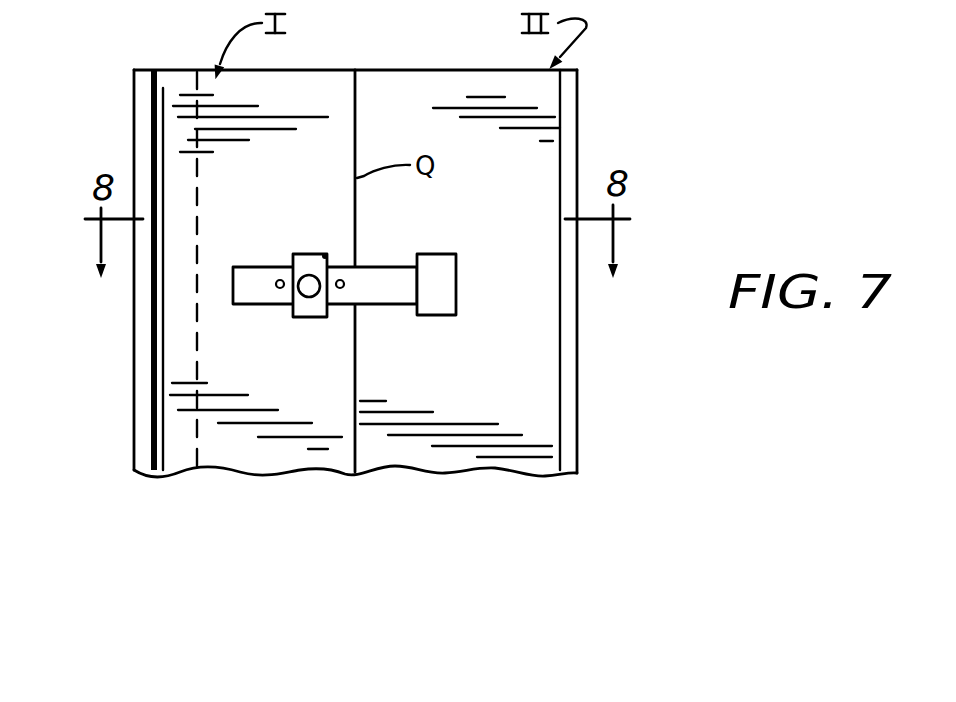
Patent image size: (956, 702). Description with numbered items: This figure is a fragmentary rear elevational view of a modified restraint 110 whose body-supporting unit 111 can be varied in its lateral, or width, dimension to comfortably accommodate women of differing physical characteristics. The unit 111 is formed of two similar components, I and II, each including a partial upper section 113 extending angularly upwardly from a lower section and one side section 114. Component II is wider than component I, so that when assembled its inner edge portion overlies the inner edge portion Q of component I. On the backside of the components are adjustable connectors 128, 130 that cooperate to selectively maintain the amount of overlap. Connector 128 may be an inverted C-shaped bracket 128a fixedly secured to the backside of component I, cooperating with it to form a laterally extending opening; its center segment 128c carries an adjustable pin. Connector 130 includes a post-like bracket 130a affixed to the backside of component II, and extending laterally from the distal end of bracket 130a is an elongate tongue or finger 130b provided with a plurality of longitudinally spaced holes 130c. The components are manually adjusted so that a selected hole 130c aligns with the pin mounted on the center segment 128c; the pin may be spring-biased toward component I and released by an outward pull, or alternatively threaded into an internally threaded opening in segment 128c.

The restraint 110 is at (108, 329).
The body-supporting unit 111 is at (483, 58).
The partial upper section 113 is at (377, 82).
The side section 114 is at (137, 94).
The adjustable connector 128 is at (288, 269).
The inverted C-shaped bracket 128a is at (311, 330).
The center segment 128c is at (325, 255).
The adjustable connector 130 is at (376, 293).
The post-like bracket 130a is at (446, 300).
The elongate tongue 130b is at (385, 297).
The holes 130c is at (279, 288).